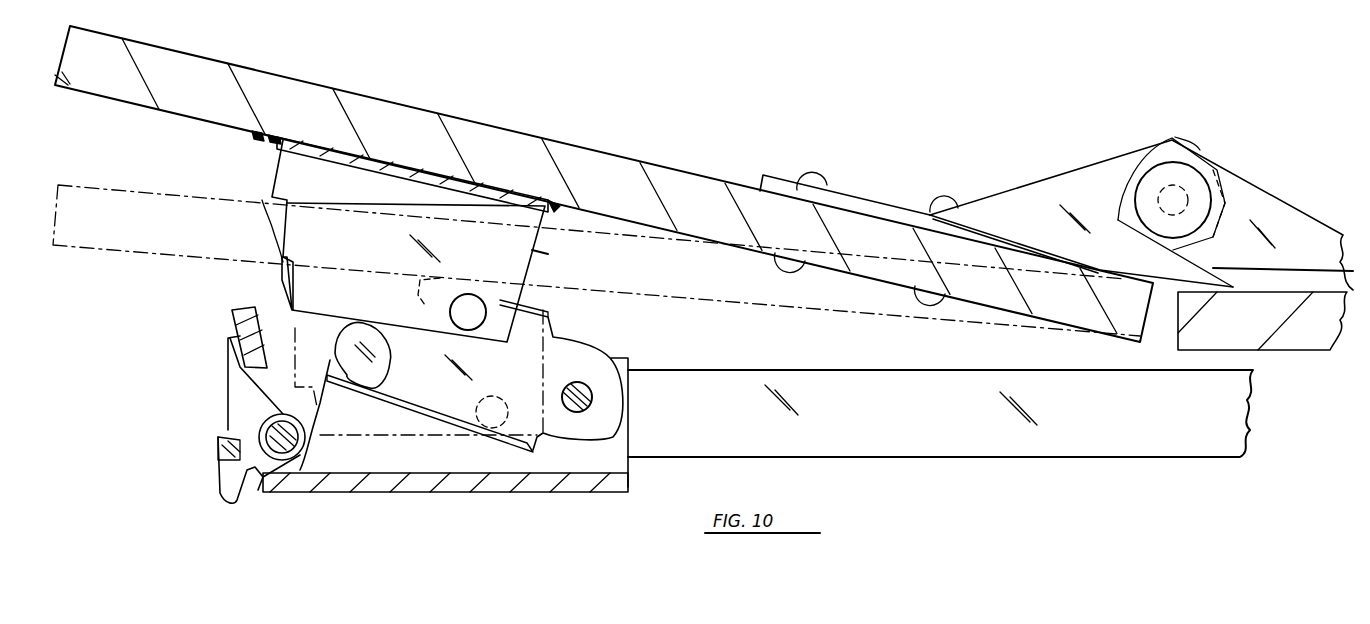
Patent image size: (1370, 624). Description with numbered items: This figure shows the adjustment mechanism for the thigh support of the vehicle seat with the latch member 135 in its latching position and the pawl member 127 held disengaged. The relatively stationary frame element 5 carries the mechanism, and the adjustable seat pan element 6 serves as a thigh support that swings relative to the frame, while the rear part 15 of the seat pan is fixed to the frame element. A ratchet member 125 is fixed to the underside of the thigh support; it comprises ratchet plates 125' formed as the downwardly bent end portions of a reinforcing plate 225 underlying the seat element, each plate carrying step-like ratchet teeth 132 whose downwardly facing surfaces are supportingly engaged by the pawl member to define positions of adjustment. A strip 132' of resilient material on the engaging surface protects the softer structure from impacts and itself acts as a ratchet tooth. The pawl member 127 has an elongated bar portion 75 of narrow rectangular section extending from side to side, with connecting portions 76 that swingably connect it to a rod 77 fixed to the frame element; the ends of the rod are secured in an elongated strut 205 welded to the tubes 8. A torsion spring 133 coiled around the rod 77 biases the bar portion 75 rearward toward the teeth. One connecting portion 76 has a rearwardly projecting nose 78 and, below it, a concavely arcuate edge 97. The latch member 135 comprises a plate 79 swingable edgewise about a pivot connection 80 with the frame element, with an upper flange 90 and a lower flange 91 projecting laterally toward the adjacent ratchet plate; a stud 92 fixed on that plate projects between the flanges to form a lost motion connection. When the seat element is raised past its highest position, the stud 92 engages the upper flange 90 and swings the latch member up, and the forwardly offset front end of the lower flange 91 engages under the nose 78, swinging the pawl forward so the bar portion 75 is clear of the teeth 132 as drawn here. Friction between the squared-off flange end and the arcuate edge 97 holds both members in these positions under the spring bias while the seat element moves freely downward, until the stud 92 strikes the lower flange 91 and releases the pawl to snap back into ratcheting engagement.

The seat pan element 6 is at (725, 183).
The frame element 5 is at (817, 369).
The tubes 8 is at (915, 458).
The rear part 15 is at (1330, 352).
The ratchet member 125 is at (600, 169).
The ratchet plates 125' is at (579, 250).
The ratchet teeth 132 is at (245, 225).
The strip of resilient material 132' is at (229, 147).
The reinforcing plate 225 is at (406, 182).
The stud 92 is at (482, 305).
The upper flange 90 is at (555, 313).
The plate 79 is at (560, 333).
The latch member 135 is at (585, 355).
The pivot connection 80 is at (592, 397).
The nose 78 is at (390, 386).
The lower flange 91 is at (435, 420).
The concavely arcuate edge 97 is at (345, 350).
The bar portion 75 is at (245, 310).
The pawl member 127 is at (214, 359).
The connecting portions 76 is at (243, 405).
The rod 77 is at (266, 426).
The torsion spring 133 is at (300, 470).
The elongated strut 205 is at (572, 496).